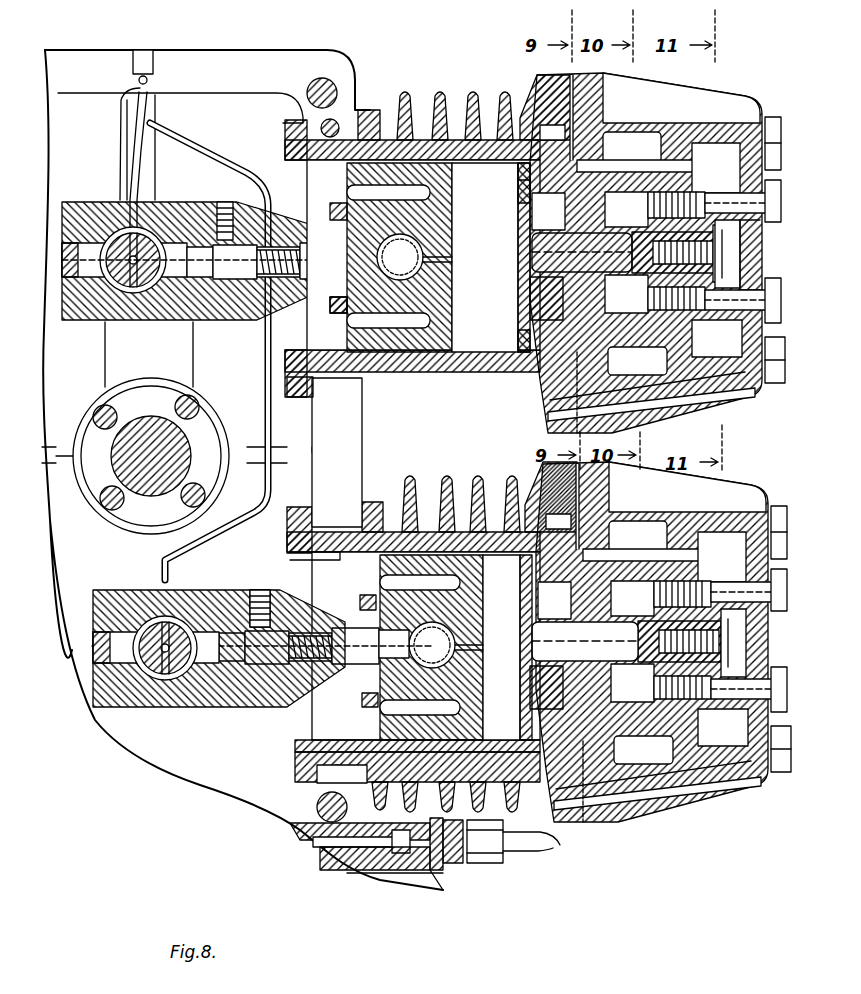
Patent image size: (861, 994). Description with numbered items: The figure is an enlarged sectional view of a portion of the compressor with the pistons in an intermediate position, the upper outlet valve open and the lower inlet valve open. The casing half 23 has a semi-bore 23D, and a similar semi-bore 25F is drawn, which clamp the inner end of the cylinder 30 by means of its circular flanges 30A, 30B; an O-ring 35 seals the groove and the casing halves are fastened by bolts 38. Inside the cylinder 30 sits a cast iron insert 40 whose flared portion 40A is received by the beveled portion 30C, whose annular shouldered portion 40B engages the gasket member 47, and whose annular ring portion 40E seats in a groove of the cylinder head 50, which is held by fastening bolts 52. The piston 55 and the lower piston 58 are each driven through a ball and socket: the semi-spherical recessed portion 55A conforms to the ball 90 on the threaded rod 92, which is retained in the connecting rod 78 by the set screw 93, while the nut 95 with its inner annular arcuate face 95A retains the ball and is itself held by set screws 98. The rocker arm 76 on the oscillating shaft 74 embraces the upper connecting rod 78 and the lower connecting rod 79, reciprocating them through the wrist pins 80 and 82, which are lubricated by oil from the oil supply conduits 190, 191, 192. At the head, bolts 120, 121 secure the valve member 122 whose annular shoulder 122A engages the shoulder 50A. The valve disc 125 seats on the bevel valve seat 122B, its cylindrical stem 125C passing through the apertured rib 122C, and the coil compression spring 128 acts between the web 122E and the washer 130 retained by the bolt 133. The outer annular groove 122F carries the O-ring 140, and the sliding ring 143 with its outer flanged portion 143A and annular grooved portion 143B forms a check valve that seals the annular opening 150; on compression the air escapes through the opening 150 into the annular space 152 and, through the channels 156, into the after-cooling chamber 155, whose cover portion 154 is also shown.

The casing half 23 is at (278, 53).
The semi-bore 23D is at (262, 372).
The passage 25F is at (290, 556).
The cylinder 30 is at (402, 449).
The circular flange 30A is at (290, 130).
The circular flange 30B is at (372, 110).
The beveled portion 30C is at (540, 378).
The O-ring 35 is at (320, 128).
The bolt 38 is at (337, 88).
The insert 40 is at (466, 124).
The flared portion 40A is at (560, 402).
The annular shouldered portion 40B is at (625, 413).
The annular ring portion 40E is at (647, 584).
The gasket member 47 is at (585, 410).
The cylinder head 50 is at (681, 465).
The shoulder 50A is at (571, 398).
The fastening bolt 52 is at (781, 145).
The piston 55 is at (390, 442).
The semi-spherical recessed portion 55A is at (471, 450).
The piston 58 is at (478, 675).
The shaft 74 is at (151, 420).
The rocker arm 76 is at (171, 428).
The connecting rod 78 is at (203, 251).
The connecting rod 79 is at (219, 661).
The wrist pin 80 is at (125, 292).
The wrist pin 82 is at (151, 671).
The ball 90 is at (455, 267).
The threaded rod 92 is at (231, 450).
The set screw 93 is at (226, 203).
The nut 95 is at (328, 210).
The inner annular arcuate face 95A is at (412, 446).
The set screw 98 is at (330, 312).
The bolt 120 is at (781, 195).
The bolt 121 is at (781, 305).
The valve member 122 is at (722, 357).
The annular shoulder 122A is at (602, 415).
The bevel valve seat 122B is at (518, 187).
The apertured rib 122C is at (633, 487).
The web 122E is at (768, 226).
The outer annular groove 122F is at (520, 340).
The valve disc 125 is at (525, 287).
The cylindrical stem 125C is at (612, 243).
The coil compression spring 128 is at (735, 292).
The washer 130 is at (730, 254).
The bolt 133 is at (742, 270).
The O-ring 140 is at (524, 175).
The ring 143 is at (590, 140).
The outer flanged portion 143A is at (637, 361).
The annular grooved portion 143B is at (553, 298).
The annular opening 150 is at (556, 128).
The annular space 152 is at (580, 120).
The head cover 154 is at (705, 350).
The after-cooling chamber 155 is at (655, 128).
The channel 156 is at (640, 395).
The oil supply conduit 190 is at (118, 113).
The oil supply conduit 191 is at (180, 140).
The oil supply conduit 192 is at (131, 147).